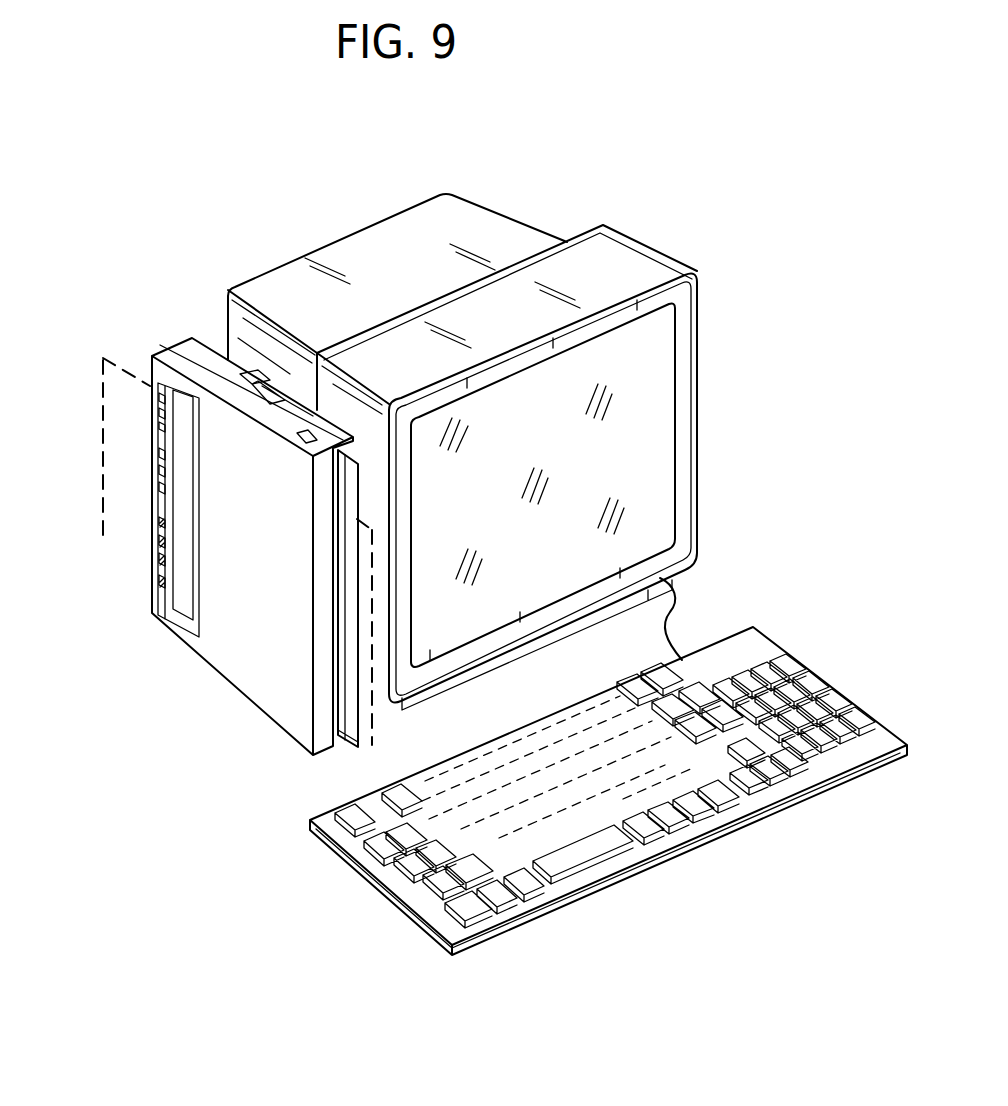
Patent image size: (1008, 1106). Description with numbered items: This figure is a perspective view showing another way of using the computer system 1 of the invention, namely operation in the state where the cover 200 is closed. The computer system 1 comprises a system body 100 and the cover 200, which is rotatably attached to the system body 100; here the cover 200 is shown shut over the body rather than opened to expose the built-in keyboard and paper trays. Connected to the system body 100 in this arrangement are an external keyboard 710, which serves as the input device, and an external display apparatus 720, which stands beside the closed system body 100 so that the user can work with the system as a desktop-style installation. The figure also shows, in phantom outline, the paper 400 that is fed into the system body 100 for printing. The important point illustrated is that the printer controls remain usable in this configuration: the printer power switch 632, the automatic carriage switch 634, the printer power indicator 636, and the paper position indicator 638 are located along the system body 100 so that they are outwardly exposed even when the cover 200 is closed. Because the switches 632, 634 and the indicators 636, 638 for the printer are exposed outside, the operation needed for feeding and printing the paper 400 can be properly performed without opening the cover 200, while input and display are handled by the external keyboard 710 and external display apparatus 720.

The computer system 1 is at (178, 312).
The system body 100 is at (340, 743).
The cover 200 is at (225, 643).
The paper 400 is at (118, 362).
The printer power switch 632 is at (157, 587).
The automatic carriage switch 634 is at (157, 563).
The printer power indicator 636 is at (157, 543).
The paper position indicator 638 is at (123, 548).
The external keyboard 710 is at (690, 830).
The external display apparatus 720 is at (640, 421).